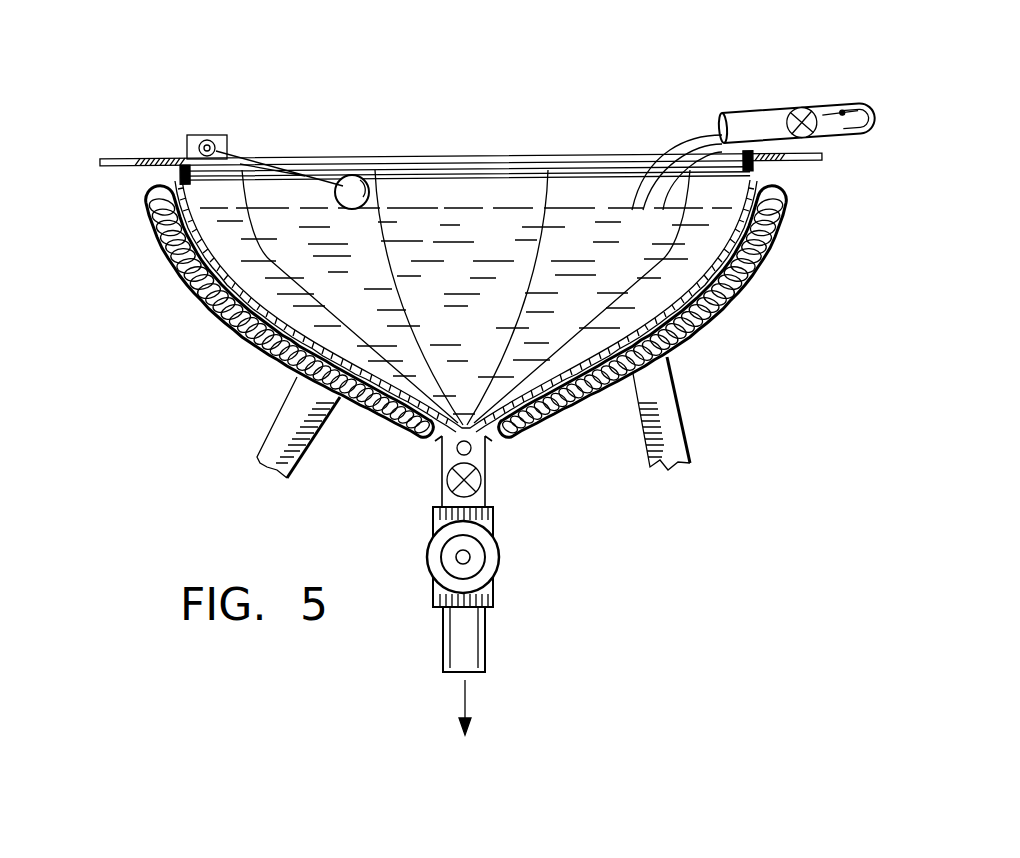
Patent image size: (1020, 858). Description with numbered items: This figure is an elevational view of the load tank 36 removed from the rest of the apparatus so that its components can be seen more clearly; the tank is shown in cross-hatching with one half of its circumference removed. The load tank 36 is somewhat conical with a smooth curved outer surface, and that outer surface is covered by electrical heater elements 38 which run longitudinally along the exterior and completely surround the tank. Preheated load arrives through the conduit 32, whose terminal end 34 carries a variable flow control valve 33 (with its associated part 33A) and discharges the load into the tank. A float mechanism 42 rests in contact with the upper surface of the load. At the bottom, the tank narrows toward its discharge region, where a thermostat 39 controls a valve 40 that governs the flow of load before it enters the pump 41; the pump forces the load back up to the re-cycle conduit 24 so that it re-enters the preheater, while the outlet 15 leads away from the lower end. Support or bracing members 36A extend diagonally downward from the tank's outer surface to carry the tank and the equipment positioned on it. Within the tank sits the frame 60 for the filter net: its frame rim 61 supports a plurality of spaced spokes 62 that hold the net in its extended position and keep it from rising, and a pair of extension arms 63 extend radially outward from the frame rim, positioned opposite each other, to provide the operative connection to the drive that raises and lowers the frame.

The condensate tank outlet 15 is at (450, 440).
The re-cycle conduit 24 is at (487, 640).
The conduit 32 is at (868, 104).
The variable flow control valve 33 is at (800, 111).
The valve stem 33A is at (848, 128).
The terminal end 34 is at (722, 128).
The load tank 36 is at (787, 178).
The support or bracing members 36A is at (283, 428).
The heater elements 38 is at (257, 352).
The thermostat 39 is at (472, 449).
The valve 40 is at (484, 484).
The pump 41 is at (500, 557).
The float mechanism 42 is at (352, 176).
The frame 60 is at (205, 278).
The frame rim 61 is at (151, 163).
The spokes 62 is at (256, 287).
The extension arms 63 is at (119, 159).